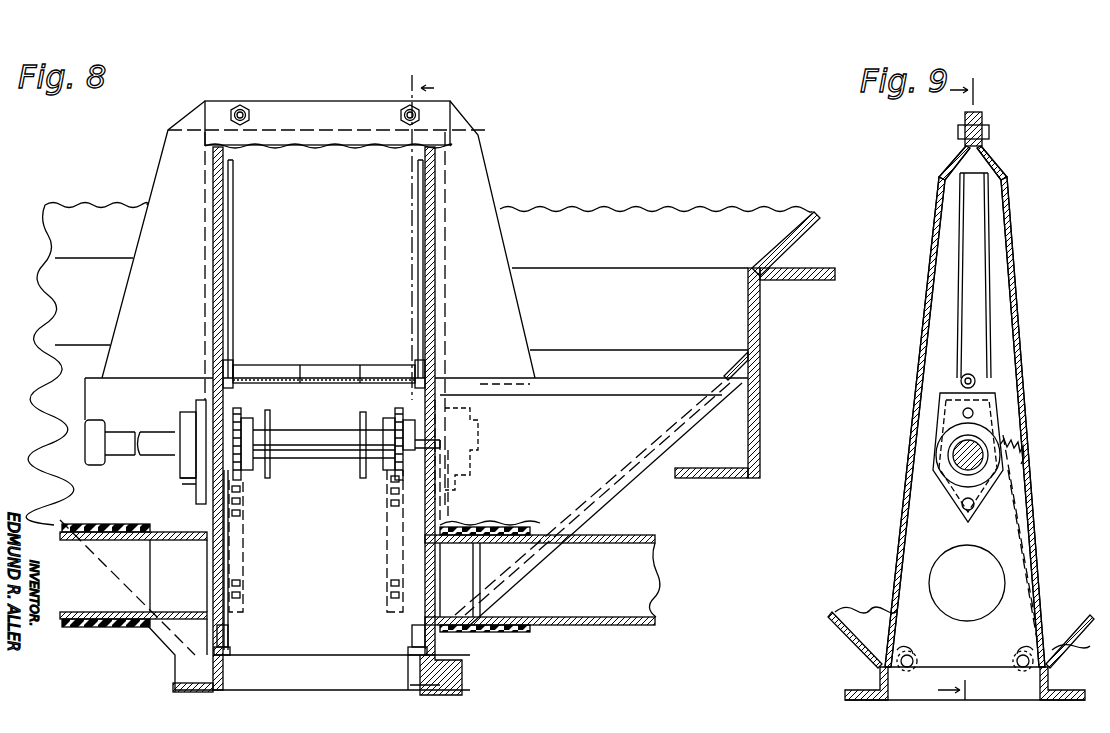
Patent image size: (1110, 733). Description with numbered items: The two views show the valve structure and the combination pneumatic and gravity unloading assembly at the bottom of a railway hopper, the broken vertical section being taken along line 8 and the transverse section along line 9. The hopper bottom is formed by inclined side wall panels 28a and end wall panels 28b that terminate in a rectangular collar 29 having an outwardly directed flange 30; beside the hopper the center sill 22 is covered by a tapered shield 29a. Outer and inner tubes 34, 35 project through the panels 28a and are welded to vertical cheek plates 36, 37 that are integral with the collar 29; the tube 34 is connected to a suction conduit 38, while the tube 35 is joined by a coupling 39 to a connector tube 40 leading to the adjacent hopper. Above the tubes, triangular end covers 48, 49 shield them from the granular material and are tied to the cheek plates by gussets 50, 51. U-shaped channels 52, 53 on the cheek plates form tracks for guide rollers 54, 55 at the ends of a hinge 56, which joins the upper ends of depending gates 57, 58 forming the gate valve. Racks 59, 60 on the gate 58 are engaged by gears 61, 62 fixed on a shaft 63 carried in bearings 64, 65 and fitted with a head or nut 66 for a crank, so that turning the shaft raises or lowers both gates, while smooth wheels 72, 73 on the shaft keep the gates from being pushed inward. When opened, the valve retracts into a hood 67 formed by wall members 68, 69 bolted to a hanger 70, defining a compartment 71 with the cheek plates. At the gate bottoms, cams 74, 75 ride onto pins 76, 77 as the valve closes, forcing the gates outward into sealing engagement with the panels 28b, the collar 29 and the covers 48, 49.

In FIG. 9, the section line 8— 8 is at (963, 390).
In FIG. 8, the section line 9— 9 is at (460, 685).
In FIG. 8, the center sill 22 is at (760, 395).
In FIG. 8, the side wall panel 28a is at (727, 356).
In FIG. 9, the end wall panel 28b is at (836, 633).
In FIG. 8, the collar 29 is at (287, 660).
In FIG. 9, the collar 29 is at (1040, 672).
In FIG. 8, the tapered shield 29a is at (782, 218).
In FIG. 8, the flange 30 is at (175, 686).
In FIG. 9, the flange 30 is at (1082, 700).
In FIG. 8, the outer tube 34 is at (160, 525).
In FIG. 8, the inner tube 35 is at (467, 530).
In FIG. 8, the cheek plate 36 is at (228, 518).
In FIG. 8, the cheek plate 37 is at (436, 514).
In FIG. 8, the suction conduit 38 is at (70, 624).
In FIG. 8, the coupling 39 is at (508, 633).
In FIG. 8, the connector tube 40 is at (625, 630).
In FIG. 8, the end cover 48 is at (136, 378).
In FIG. 9, the end cover 48 is at (898, 572).
In FIG. 8, the end cover 49 is at (648, 474).
In FIG. 8, the gusset 50 is at (172, 148).
In FIG. 8, the gusset 51 is at (480, 156).
In FIG. 8, the U-shaped channel 52 is at (233, 217).
In FIG. 9, the U-shaped channel 52 is at (975, 243).
In FIG. 8, the U-shaped channel 53 is at (418, 232).
In FIG. 8, the guide roller 54 is at (230, 366).
In FIG. 9, the guide roller 54 is at (972, 382).
In FIG. 8, the guide roller 55 is at (414, 364).
In FIG. 8, the hinge 56 is at (323, 366).
In FIG. 9, the hinge 56 is at (974, 383).
In FIG. 8, the gate 57 is at (304, 368).
In FIG. 9, the gate 57 is at (910, 512).
In FIG. 8, the gate 58 is at (322, 656).
In FIG. 9, the gate 58 is at (1028, 525).
In FIG. 8, the rack 59 is at (243, 594).
In FIG. 8, the rack 60 is at (387, 580).
In FIG. 9, the rack 60 is at (1018, 496).
In FIG. 8, the gear 61 is at (242, 468).
In FIG. 8, the gear 62 is at (382, 477).
In FIG. 9, the gear 62 is at (1012, 452).
In FIG. 8, the shaft 63 is at (328, 434).
In FIG. 9, the shaft 63 is at (985, 440).
In FIG. 8, the bearing 64 is at (194, 396).
In FIG. 8, the bearing 65 is at (455, 422).
In FIG. 8, the head or nut 66 is at (85, 435).
In FIG. 9, the hood 67 is at (1018, 195).
In FIG. 8, the wall member 68 is at (393, 96).
In FIG. 9, the wall member 68 is at (924, 297).
In FIG. 8, the wall member 69 is at (378, 80).
In FIG. 9, the wall member 69 is at (1016, 300).
In FIG. 8, the strap or hanger 70 is at (454, 122).
In FIG. 9, the strap or hanger 70 is at (974, 122).
In FIG. 9, the compartment 71 is at (996, 290).
In FIG. 8, the wheel 72 is at (270, 424).
In FIG. 8, the wheel 73 is at (360, 476).
In FIG. 9, the wheel 73 is at (936, 476).
In FIG. 9, the cam 74 is at (908, 650).
In FIG. 8, the cam 75 is at (228, 634).
In FIG. 9, the cam 75 is at (1022, 648).
In FIG. 9, the pin 76 is at (917, 661).
In FIG. 8, the pin 77 is at (226, 655).
In FIG. 9, the pin 77 is at (1013, 661).